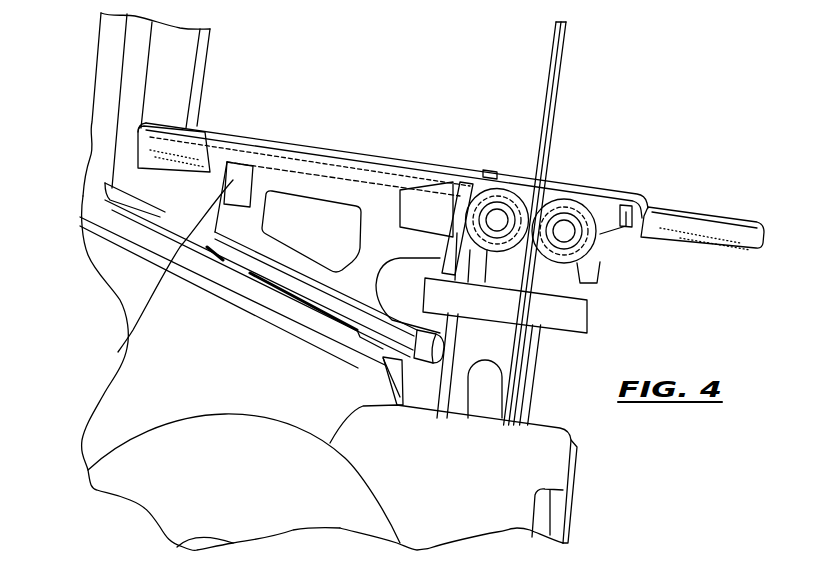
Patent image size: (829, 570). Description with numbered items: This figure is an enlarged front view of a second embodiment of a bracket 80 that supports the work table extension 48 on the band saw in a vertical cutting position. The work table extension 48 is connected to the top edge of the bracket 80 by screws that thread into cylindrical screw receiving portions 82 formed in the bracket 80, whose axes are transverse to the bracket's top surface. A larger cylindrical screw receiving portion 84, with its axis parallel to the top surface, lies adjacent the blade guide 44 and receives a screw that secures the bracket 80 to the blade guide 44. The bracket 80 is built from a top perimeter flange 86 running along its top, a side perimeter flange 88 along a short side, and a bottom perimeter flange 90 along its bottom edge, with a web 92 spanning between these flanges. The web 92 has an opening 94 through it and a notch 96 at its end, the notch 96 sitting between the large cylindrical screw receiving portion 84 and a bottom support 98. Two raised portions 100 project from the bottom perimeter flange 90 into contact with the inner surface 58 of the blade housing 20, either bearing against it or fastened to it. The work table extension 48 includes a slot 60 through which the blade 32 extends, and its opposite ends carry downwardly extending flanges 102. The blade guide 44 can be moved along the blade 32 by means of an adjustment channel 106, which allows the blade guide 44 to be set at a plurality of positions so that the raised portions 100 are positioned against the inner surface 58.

The blade housing 20 is at (110, 72).
The blade 32 is at (557, 100).
The blade guide 44 is at (588, 248).
The work table extension 48 is at (745, 219).
The inner surface 58 is at (240, 183).
The slot 60 is at (490, 172).
The bracket 80 is at (210, 275).
The cylindrical screw receiving portions 82 is at (155, 240).
The large cylindrical screw receiving portion 84 is at (266, 340).
The top perimeter flange 86 is at (294, 162).
The side perimeter flange 88 is at (117, 173).
The bottom perimeter flange 90 is at (349, 312).
The web 92 is at (215, 318).
The opening 94 is at (318, 207).
The notch 96 is at (397, 303).
The bottom support 98 is at (427, 337).
The raised portions 100 is at (318, 207).
The downwardly extending flanges 102 is at (152, 146).
The adjustment channel 106 is at (525, 372).